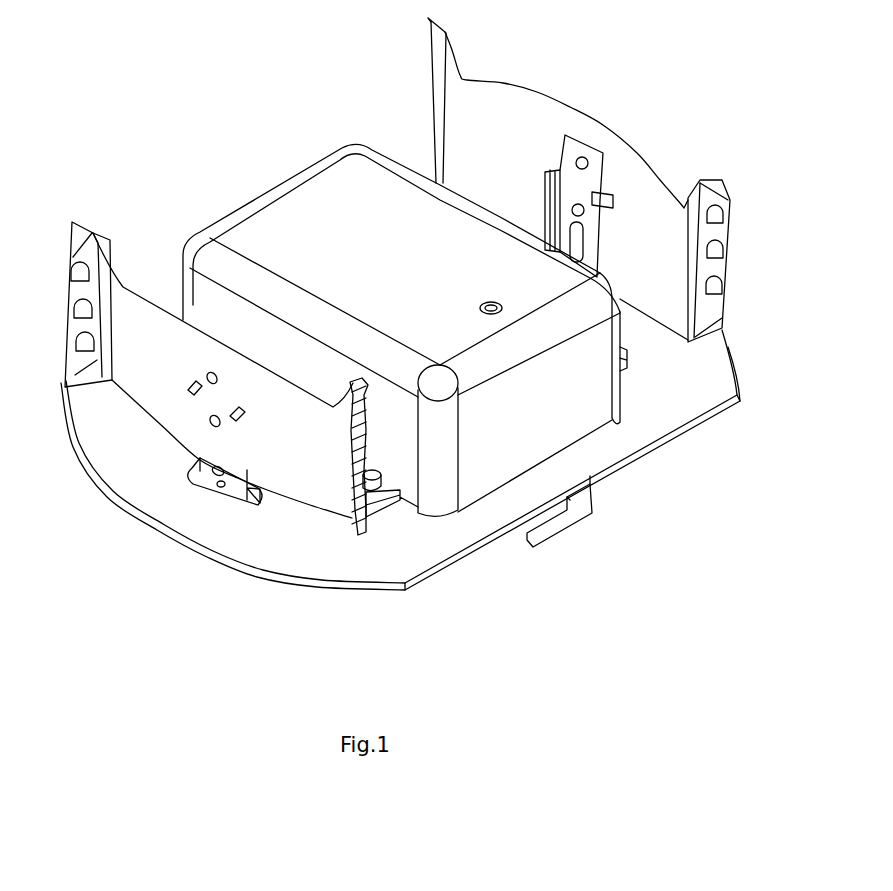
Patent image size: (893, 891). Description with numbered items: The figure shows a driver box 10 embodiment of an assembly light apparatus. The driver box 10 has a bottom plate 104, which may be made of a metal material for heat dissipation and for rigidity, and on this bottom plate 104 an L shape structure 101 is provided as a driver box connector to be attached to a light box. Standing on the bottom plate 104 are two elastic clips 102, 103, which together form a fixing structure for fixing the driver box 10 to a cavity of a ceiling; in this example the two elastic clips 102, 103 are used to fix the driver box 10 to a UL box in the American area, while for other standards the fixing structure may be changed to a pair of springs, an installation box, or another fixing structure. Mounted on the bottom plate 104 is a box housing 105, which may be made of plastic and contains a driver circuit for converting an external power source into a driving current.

The driver box 10 is at (443, 500).
The L shape structure 101 is at (553, 533).
The elastic clip 102 is at (330, 500).
The elastic clip 103 is at (677, 280).
The bottom plate 104 is at (673, 412).
The box housing 105 is at (573, 417).